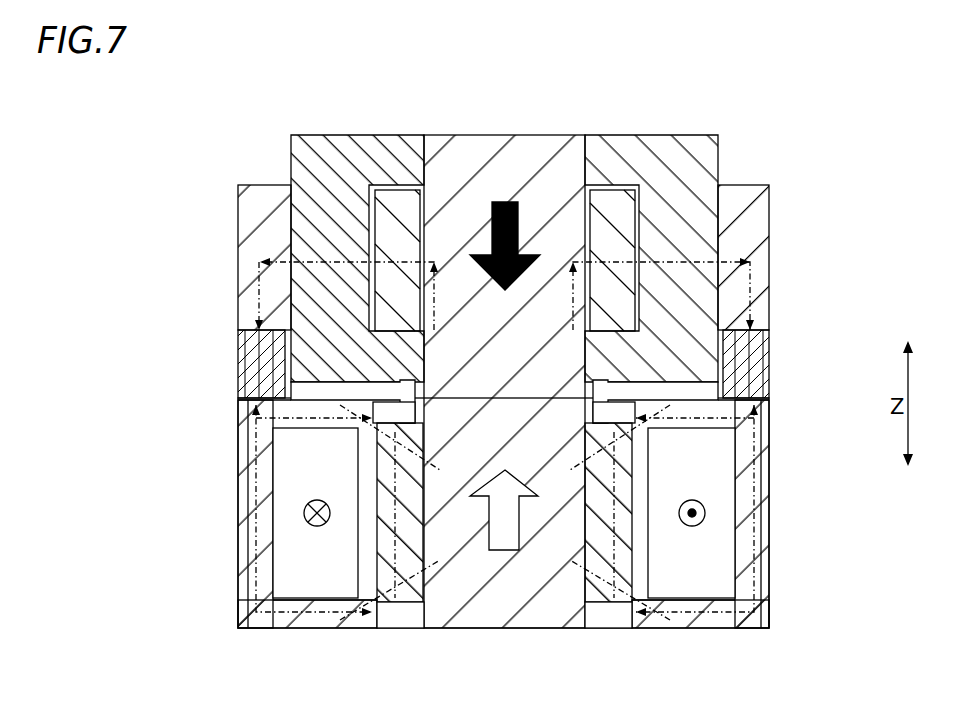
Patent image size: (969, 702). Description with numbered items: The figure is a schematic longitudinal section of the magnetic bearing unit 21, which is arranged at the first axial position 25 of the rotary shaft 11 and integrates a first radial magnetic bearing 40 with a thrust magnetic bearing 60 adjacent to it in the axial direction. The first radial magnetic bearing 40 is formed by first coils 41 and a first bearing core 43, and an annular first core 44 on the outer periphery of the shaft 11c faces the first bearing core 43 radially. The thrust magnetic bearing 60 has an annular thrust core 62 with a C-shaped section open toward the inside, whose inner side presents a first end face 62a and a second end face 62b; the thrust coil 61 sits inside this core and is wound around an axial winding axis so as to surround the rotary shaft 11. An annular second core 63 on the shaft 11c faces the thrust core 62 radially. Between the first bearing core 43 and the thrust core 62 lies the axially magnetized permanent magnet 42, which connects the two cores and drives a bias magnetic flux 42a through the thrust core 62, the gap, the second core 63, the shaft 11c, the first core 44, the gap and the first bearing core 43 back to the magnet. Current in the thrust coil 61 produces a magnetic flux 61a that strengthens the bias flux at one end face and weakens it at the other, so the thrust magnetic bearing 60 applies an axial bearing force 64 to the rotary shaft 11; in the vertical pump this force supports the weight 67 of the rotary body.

The magnetic bearing unit 21 is at (133, 185).
The first axial position 25 is at (163, 237).
The first radial magnetic bearing 40 is at (230, 262).
The first coil 41 is at (300, 157).
The first bearing core 43 is at (258, 205).
The first core 44 is at (395, 195).
The magnet 42 is at (240, 358).
The bias magnetic flux 42a is at (340, 405).
The shaft 11c is at (505, 162).
The rotary shaft 11 is at (504, 386).
The weight 67 is at (476, 240).
The thrust magnetic bearing 60 is at (225, 500).
The thrust coil 61 is at (317, 513).
The magnetic flux of the thrust coil 61a is at (257, 447).
The thrust core 62 is at (240, 528).
The first end face 62a is at (392, 415).
The second end face 62b is at (385, 625).
The second core 63 is at (418, 597).
The bearing force 64 is at (503, 597).